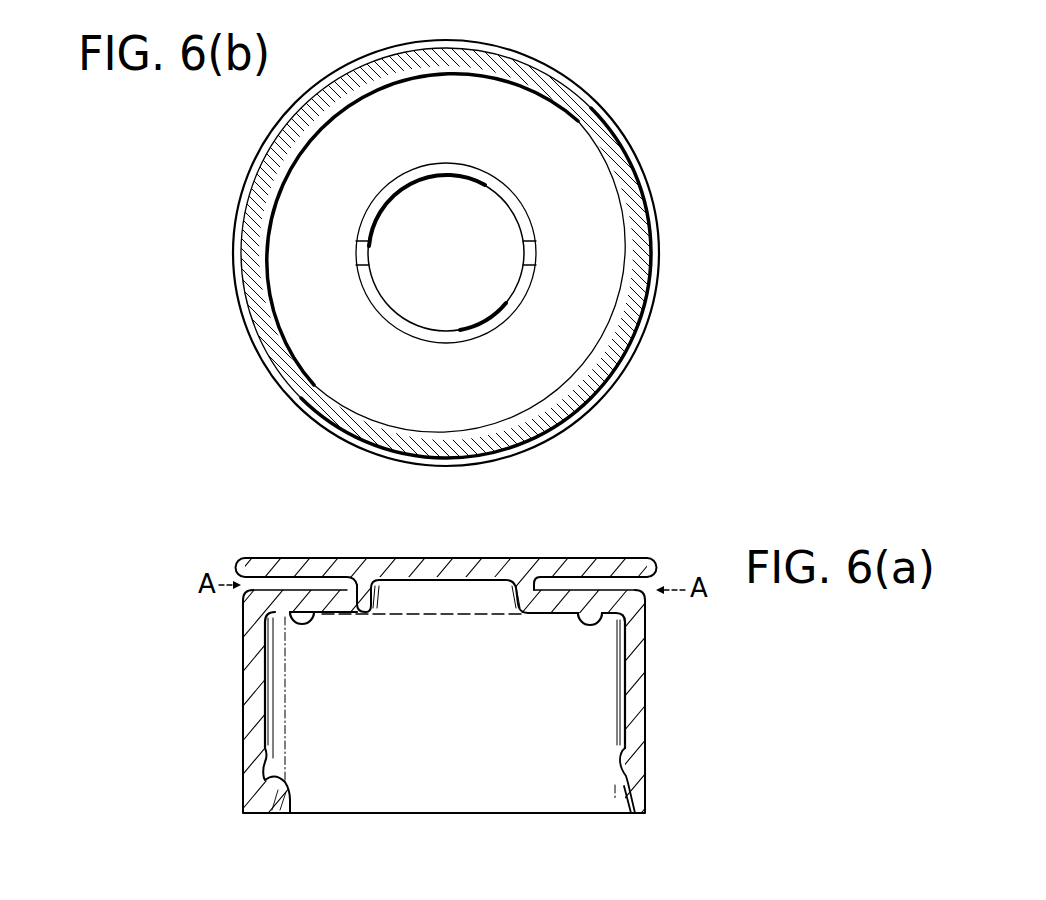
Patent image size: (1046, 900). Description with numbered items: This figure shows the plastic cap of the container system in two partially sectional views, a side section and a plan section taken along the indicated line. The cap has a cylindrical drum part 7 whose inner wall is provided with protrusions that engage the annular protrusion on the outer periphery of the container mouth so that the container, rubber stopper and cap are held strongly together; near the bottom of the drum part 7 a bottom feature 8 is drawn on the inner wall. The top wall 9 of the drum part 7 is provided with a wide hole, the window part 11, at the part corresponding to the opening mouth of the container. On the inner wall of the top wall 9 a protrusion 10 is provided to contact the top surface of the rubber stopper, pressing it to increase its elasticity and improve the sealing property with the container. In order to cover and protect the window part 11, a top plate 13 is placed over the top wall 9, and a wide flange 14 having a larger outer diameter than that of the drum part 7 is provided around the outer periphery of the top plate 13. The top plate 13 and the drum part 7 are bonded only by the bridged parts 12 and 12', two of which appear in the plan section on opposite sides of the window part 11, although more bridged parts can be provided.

In FIG. 6B, the drum part 7 is at (636, 350).
In FIG. 6A, the drum part 7 is at (637, 715).
In FIG. 6A, the bottom protrusion 8 is at (287, 800).
In FIG. 6A, the top wall 9 is at (245, 618).
In FIG. 6A, the protrusion 10 is at (590, 626).
In FIG. 6B, the window part 11 is at (453, 187).
In FIG. 6A, the window part 11 is at (446, 597).
In FIG. 6B, the bridged part 12 is at (351, 253).
In FIG. 6A, the bridged part 12 is at (335, 556).
In FIG. 6B, the bridged part 12' is at (640, 244).
In FIG. 6A, the bridged part 12' is at (510, 557).
In FIG. 6B, the top plate 13 is at (563, 177).
In FIG. 6A, the top plate 13 is at (410, 566).
In FIG. 6B, the flange 14 is at (645, 174).
In FIG. 6A, the flange 14 is at (632, 562).